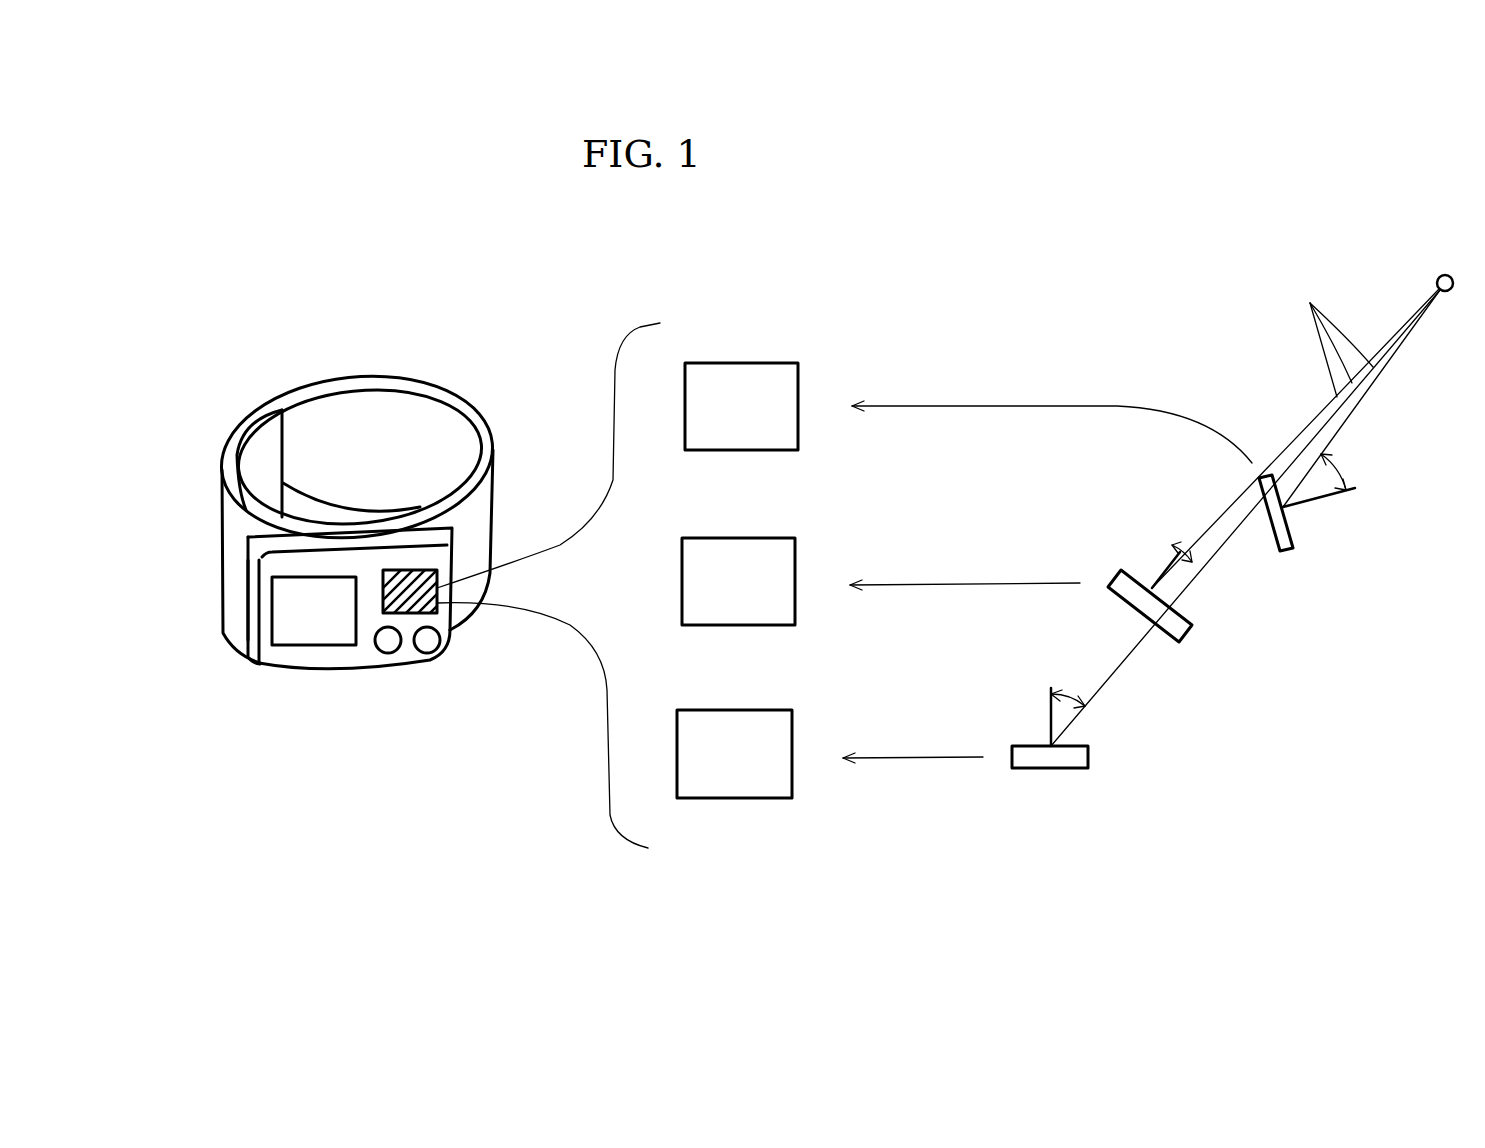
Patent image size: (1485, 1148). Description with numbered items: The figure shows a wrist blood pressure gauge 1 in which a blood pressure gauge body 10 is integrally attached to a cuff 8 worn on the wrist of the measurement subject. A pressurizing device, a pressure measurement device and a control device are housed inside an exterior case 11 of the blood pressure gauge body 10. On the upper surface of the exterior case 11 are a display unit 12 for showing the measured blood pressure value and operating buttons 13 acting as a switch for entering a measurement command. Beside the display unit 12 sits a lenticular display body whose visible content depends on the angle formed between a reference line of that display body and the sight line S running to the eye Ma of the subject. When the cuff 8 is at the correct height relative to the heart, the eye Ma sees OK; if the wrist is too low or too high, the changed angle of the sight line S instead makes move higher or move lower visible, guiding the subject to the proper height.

The wrist blood pressure gauge 1 is at (308, 530).
The cuff 8 is at (237, 528).
The blood pressure gauge body 10 is at (258, 670).
The exterior case 11 is at (250, 624).
The display unit 12 is at (313, 633).
The operating buttons 13 is at (427, 652).
The sight line S is at (1310, 303).
The eye Ma is at (1445, 275).